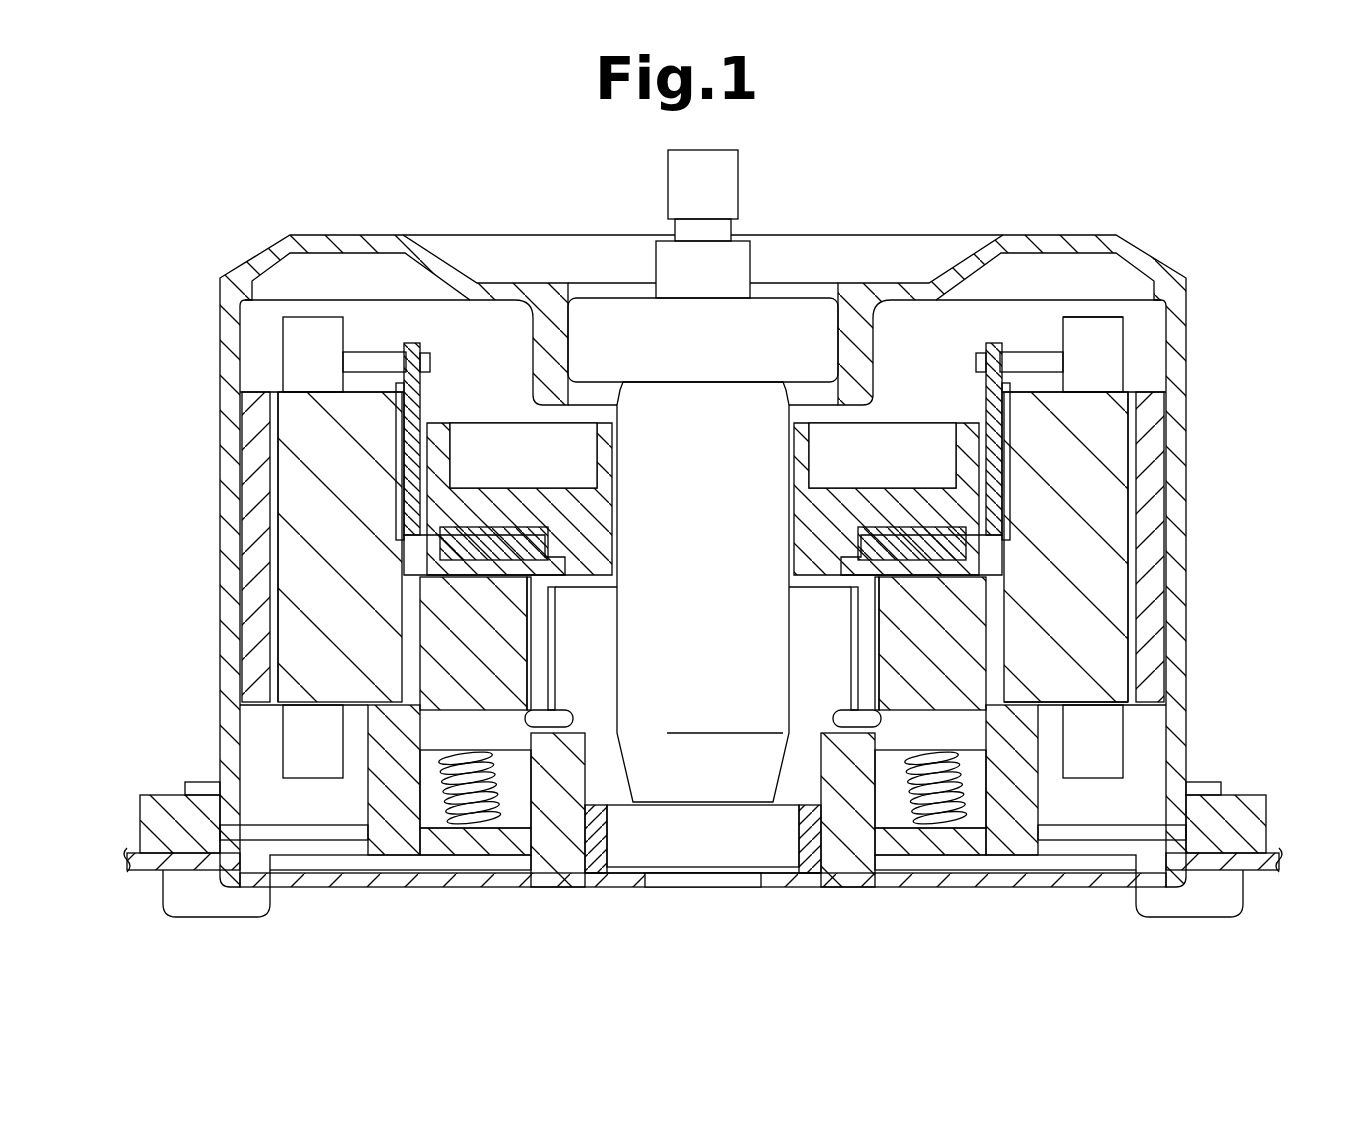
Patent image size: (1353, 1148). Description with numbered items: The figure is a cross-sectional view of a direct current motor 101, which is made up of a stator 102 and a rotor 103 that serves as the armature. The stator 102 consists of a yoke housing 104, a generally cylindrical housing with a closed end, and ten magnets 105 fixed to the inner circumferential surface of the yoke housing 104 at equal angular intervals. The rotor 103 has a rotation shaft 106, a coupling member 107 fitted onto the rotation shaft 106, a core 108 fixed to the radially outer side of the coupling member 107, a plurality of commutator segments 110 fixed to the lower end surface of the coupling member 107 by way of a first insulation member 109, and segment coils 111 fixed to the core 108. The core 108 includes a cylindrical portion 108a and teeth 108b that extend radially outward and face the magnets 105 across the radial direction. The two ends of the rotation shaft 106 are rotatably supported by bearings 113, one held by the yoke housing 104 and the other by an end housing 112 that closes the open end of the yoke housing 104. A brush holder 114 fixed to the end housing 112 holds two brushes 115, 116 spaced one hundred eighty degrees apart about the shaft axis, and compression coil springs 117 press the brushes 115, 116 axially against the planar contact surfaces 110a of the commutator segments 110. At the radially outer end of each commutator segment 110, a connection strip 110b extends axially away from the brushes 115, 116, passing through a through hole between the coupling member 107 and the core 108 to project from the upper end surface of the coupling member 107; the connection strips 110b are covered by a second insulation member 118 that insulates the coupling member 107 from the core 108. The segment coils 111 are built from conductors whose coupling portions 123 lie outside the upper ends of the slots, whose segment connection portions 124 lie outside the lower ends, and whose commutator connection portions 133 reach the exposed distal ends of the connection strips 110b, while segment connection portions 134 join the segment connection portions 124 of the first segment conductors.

The direct current motor 101 is at (786, 561).
The stator 102 is at (1188, 428).
The rotor 103 is at (1132, 470).
The yoke housing 104 is at (1182, 498).
The magnets 105 is at (250, 510).
The rotation shaft 106 is at (738, 646).
The coupling member 107 is at (800, 497).
The core 108 is at (1125, 590).
The cylindrical portion 108a is at (1015, 707).
The teeth 108b is at (285, 567).
The first insulation member 109 is at (840, 545).
The commutator segments 110 is at (522, 562).
The contact surface 110a is at (527, 603).
The connection strip 110b is at (412, 340).
The segment coils 111 is at (1128, 336).
The end housing 112 is at (972, 882).
The bearings 113 is at (775, 300).
The brush holder 114 is at (850, 833).
The brush 115 is at (1128, 690).
The brush 116 is at (440, 663).
The compression coil springs 117 is at (473, 813).
The second insulation member 118 is at (433, 463).
The coupling portion 123 is at (1110, 318).
The segment connection portions 124 is at (1125, 752).
The commutator connection portion 133 is at (368, 362).
The segment connection portion 134 is at (725, 817).